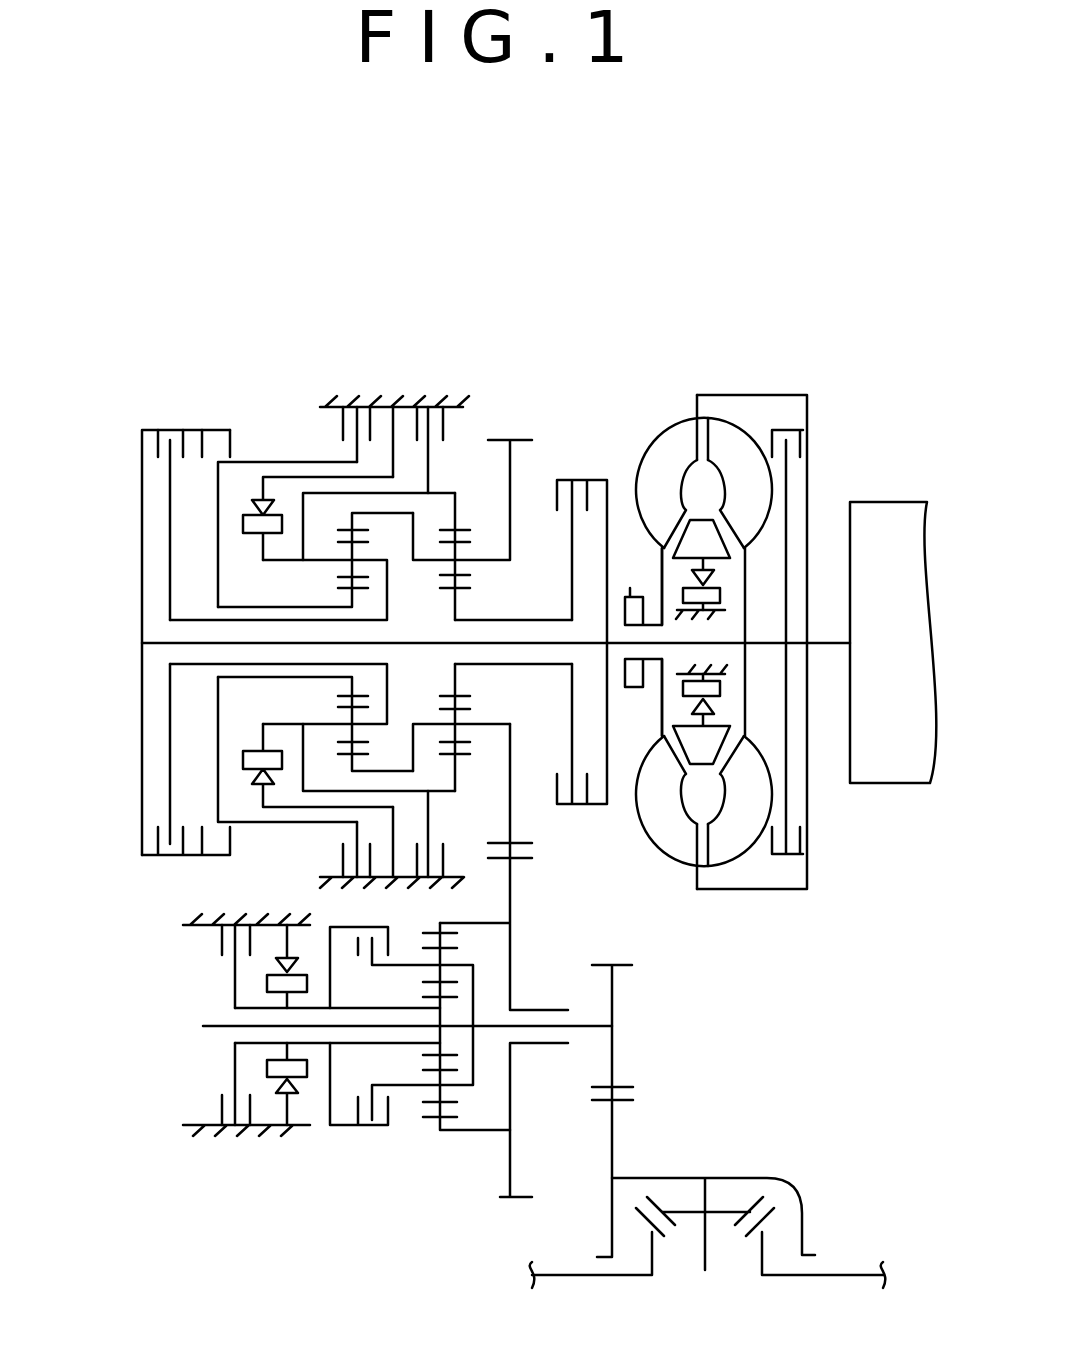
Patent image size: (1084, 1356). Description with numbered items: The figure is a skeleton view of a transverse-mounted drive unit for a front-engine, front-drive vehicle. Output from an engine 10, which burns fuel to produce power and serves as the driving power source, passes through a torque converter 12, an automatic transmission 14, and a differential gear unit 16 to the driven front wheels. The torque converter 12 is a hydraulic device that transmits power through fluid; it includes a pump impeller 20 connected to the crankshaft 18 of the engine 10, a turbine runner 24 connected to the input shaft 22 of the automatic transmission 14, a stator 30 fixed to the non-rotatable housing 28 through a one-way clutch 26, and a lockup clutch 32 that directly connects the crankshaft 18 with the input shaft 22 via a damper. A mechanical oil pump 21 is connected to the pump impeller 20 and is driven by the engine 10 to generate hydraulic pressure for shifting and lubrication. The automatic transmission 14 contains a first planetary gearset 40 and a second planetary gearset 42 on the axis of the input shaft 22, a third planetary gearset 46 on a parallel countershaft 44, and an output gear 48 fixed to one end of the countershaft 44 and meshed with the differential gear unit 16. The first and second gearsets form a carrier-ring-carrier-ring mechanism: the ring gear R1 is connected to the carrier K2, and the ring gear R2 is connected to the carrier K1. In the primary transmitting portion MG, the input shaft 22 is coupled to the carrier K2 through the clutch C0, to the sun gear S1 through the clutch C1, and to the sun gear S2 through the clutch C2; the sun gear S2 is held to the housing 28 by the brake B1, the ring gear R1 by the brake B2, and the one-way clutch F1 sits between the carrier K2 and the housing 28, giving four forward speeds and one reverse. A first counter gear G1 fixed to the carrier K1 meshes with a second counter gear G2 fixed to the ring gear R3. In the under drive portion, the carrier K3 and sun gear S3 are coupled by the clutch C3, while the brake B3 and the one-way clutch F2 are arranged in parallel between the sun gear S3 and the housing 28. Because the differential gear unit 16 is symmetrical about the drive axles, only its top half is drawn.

The engine 10 is at (893, 525).
The torque converter 12 is at (777, 377).
The automatic transmission 14 is at (528, 330).
The differential gear unit 16 is at (693, 1137).
The crankshaft 18 is at (832, 643).
The pump impeller 20 is at (682, 437).
The mechanical oil pump 21 is at (638, 642).
The input shaft 22 is at (537, 643).
The turbine runner 24 is at (725, 848).
The one-way clutch 26 is at (683, 730).
The housing 28 is at (395, 400).
The stator 30 is at (695, 547).
The lockup clutch 32 is at (802, 445).
The first planetary gearset 40 is at (462, 470).
The second planetary gearset 42 is at (332, 520).
The countershaft 44 is at (218, 1025).
The third planetary gearset 46 is at (425, 1130).
The output gear 48 is at (620, 1087).
The primary transmitting portion MG is at (128, 796).
The clutch C0 is at (160, 430).
The clutch C1 is at (572, 480).
The clutch C2 is at (218, 430).
The clutch C3 is at (378, 1128).
The brake B1 is at (340, 424).
The brake B2 is at (445, 424).
The brake B3 is at (222, 1110).
The one-way clutch F1 is at (243, 524).
The one-way clutch F2 is at (296, 1087).
The ring gear R1 is at (458, 530).
The ring gear R2 is at (370, 522).
The ring gear R3 is at (428, 935).
The sun gear S1 is at (460, 590).
The sun gear S2 is at (343, 592).
The sun gear S3 is at (425, 997).
The carrier K1 is at (492, 558).
The carrier K2 is at (323, 562).
The carrier K3 is at (455, 965).
The first counter gear G1 is at (523, 838).
The second counter gear G2 is at (522, 1196).